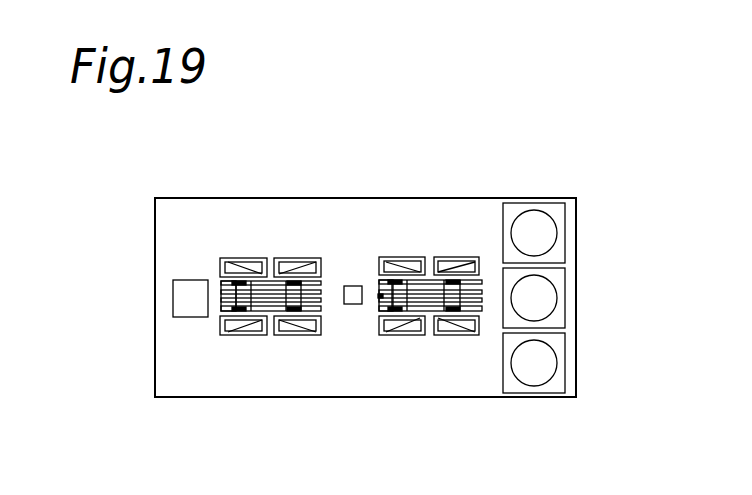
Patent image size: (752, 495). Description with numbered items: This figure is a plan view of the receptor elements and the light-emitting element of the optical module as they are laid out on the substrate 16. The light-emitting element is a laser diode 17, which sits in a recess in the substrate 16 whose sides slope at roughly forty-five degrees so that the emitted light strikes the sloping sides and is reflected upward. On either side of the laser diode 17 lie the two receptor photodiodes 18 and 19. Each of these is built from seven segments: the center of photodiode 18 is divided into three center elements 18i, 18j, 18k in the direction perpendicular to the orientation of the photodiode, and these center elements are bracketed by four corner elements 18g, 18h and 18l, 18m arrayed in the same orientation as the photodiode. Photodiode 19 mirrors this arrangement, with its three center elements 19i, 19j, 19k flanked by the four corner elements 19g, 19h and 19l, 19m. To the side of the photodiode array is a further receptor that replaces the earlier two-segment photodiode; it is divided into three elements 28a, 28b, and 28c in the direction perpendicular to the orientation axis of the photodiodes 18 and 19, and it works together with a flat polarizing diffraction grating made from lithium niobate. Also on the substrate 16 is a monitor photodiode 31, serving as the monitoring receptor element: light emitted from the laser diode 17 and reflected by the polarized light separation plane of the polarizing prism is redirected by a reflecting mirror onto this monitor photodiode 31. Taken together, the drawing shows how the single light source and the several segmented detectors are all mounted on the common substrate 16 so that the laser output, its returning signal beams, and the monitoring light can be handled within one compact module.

The substrate 16 is at (155, 212).
The laser diode 17 is at (349, 287).
The photodiode 18 is at (229, 312).
The corner element 18g is at (246, 270).
The corner element 18h is at (300, 269).
The center element 18i is at (323, 287).
The center element 18j is at (316, 312).
The center element 18k is at (222, 305).
The corner element 18l is at (248, 333).
The corner element 18m is at (290, 333).
The photodiode 19 is at (415, 300).
The corner element 19g is at (393, 260).
The corner element 19h is at (445, 257).
The center element 19i is at (483, 282).
The center element 19j is at (380, 296).
The center element 19k is at (483, 311).
The corner element 19l is at (405, 334).
The corner element 19m is at (442, 334).
The photodiode element 28a is at (557, 258).
The photodiode element 28b is at (557, 318).
The photodiode element 28c is at (560, 383).
The monitor photodiode 31 is at (183, 298).